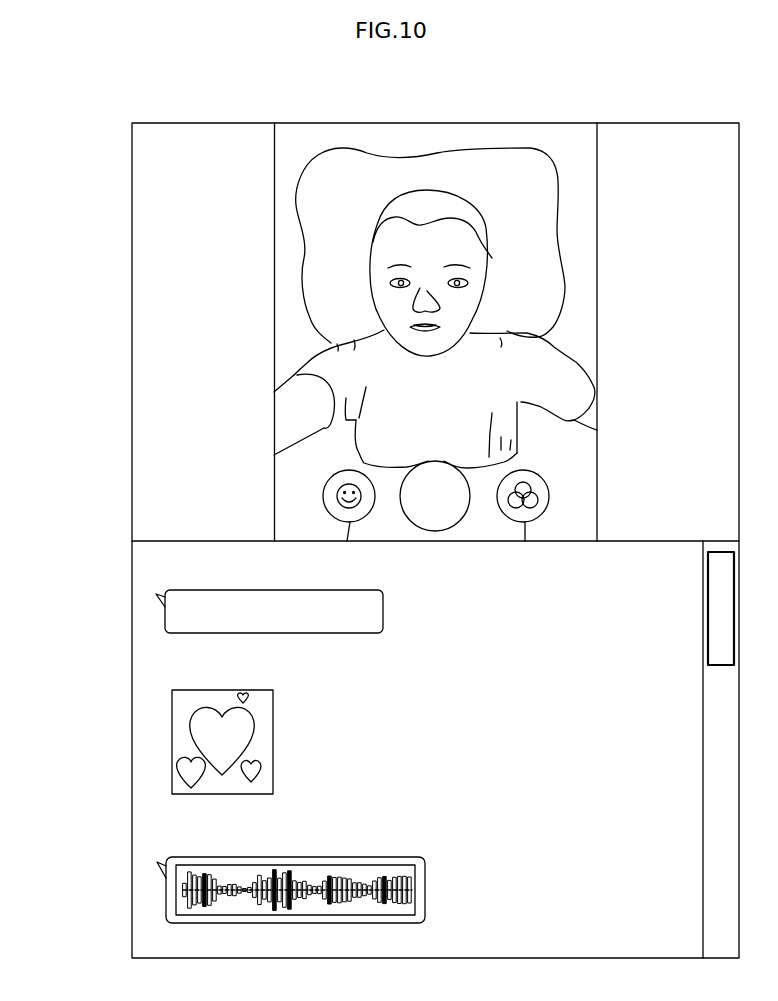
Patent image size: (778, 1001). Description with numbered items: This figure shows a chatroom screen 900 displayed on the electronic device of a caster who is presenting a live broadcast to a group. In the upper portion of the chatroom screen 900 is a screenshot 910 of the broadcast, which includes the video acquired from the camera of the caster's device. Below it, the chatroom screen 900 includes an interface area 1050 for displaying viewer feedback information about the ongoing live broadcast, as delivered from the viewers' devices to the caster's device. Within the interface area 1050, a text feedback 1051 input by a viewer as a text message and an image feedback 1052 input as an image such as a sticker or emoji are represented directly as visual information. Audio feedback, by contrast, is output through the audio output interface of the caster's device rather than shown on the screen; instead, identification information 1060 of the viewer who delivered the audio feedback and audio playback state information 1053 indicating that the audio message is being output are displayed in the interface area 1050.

The chatroom screen 900 is at (456, 106).
The screenshot 910 is at (117, 125).
The interface area 1050 is at (117, 538).
The text feedback 1051 is at (383, 610).
The image feedback 1052 is at (273, 742).
The audio playback state information 1053 is at (425, 892).
The identification information 1060 is at (258, 830).